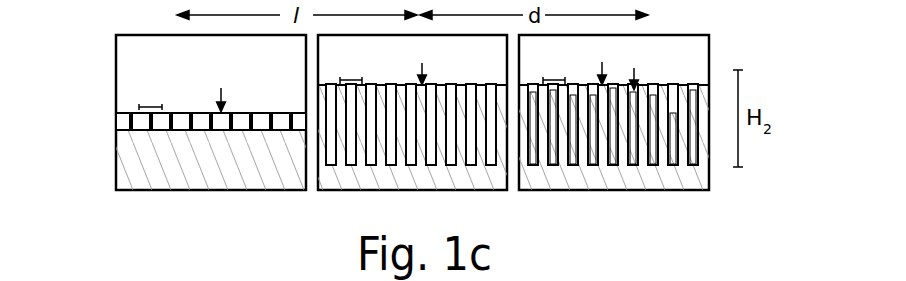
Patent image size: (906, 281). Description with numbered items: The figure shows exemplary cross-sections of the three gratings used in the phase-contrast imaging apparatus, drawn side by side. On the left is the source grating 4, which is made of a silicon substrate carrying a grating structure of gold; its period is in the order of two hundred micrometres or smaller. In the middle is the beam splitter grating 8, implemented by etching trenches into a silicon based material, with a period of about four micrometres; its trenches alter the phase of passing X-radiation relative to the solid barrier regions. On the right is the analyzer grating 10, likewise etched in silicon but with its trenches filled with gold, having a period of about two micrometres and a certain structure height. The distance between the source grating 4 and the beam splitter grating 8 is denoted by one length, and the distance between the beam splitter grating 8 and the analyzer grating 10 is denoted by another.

The source grating 4 is at (223, 170).
The beam splitter grating 8 is at (410, 170).
The analyzer grating 10 is at (615, 175).